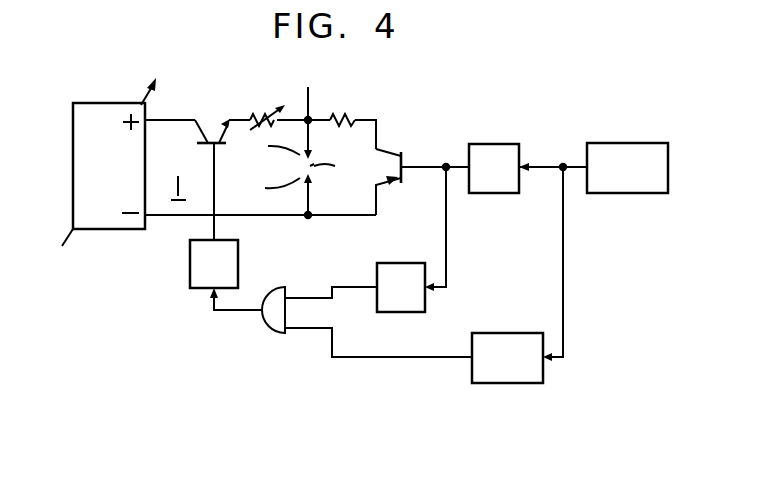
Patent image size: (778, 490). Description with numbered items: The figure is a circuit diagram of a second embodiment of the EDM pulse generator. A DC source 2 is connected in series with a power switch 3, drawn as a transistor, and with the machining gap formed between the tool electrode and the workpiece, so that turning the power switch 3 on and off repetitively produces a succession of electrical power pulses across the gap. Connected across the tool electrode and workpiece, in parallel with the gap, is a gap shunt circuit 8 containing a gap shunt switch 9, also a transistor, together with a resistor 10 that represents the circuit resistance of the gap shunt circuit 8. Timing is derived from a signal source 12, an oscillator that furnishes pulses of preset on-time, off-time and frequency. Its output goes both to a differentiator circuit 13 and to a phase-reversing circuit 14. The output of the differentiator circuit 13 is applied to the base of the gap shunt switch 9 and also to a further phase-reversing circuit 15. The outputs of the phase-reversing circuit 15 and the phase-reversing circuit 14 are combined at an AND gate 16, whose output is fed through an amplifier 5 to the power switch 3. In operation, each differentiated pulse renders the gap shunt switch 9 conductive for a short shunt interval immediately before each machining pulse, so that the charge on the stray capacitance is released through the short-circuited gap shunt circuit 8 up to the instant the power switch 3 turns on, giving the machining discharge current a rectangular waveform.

The DC source 2 is at (73, 181).
The power switch 3 is at (212, 127).
The amplifier 5 is at (190, 265).
The gap shunt circuit 8 is at (362, 139).
The gap shunt switch 9 is at (388, 152).
The resistor 10 is at (340, 113).
The signal source 12 is at (633, 195).
The differentiator circuit 13 is at (498, 143).
The phase-reversing circuit 14 is at (468, 380).
The phase-reversing circuit 15 is at (412, 312).
The AND gate 16 is at (268, 331).